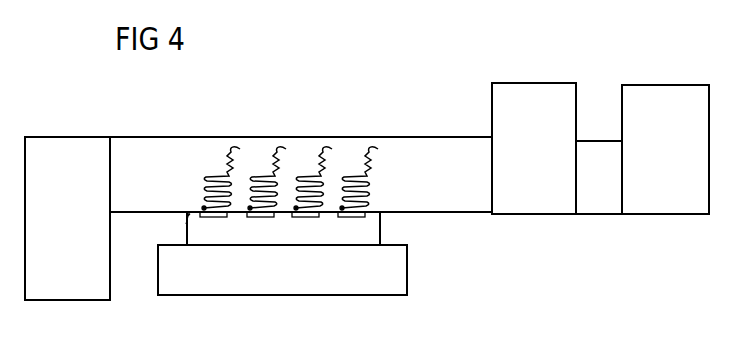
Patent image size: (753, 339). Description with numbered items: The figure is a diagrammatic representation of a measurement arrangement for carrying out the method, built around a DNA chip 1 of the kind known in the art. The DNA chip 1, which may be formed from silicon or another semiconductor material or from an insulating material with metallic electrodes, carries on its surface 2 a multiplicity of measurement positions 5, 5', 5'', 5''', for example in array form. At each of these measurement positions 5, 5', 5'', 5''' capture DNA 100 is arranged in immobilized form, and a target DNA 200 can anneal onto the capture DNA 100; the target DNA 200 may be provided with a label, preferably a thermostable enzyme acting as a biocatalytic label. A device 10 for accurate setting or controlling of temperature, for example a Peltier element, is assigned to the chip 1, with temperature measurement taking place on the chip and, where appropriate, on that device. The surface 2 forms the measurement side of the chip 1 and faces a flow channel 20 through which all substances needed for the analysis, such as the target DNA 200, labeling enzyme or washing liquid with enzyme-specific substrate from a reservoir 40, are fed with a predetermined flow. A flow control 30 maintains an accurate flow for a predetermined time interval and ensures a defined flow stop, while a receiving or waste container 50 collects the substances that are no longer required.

The DNA chip 1 is at (373, 228).
The surface 2 is at (186, 224).
The measurement position 5 is at (213, 245).
The measurement position 5' is at (260, 245).
The measurement position 5'' is at (308, 245).
The measurement position 5''' is at (357, 245).
The device for controlling of temperature 10 is at (400, 273).
The flow channel 20 is at (418, 150).
The flow control 30 is at (526, 93).
The reservoir 40 is at (672, 97).
The receiving or waste container 50 is at (65, 148).
The capture DNA 100 is at (207, 190).
The target DNA 200 is at (240, 149).